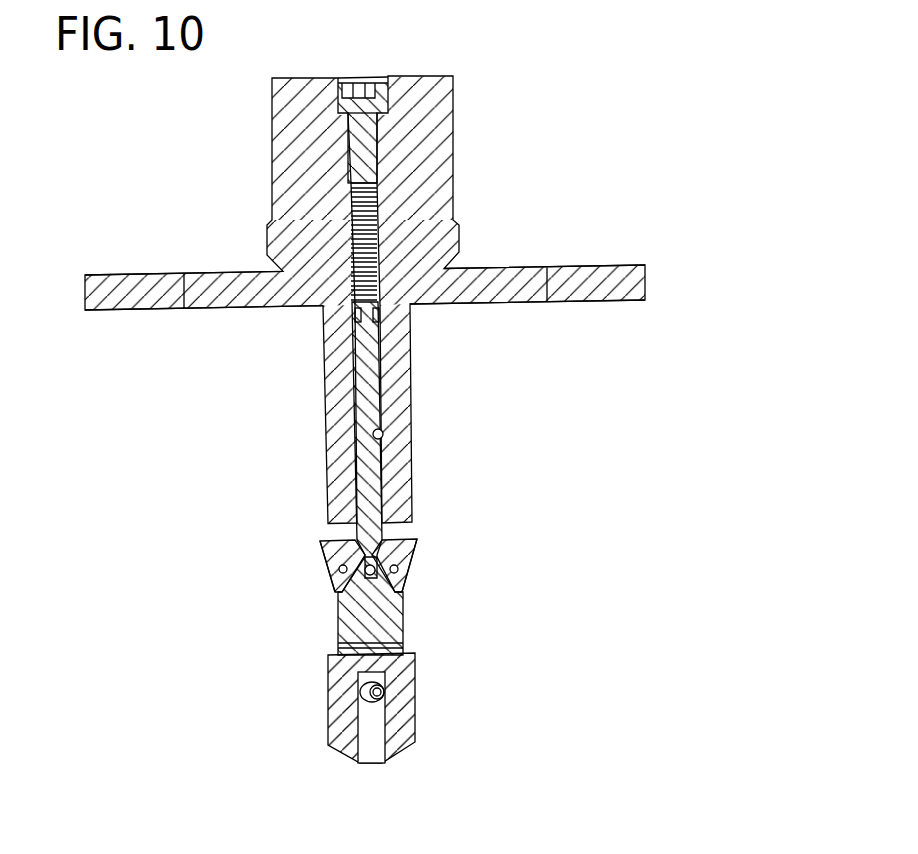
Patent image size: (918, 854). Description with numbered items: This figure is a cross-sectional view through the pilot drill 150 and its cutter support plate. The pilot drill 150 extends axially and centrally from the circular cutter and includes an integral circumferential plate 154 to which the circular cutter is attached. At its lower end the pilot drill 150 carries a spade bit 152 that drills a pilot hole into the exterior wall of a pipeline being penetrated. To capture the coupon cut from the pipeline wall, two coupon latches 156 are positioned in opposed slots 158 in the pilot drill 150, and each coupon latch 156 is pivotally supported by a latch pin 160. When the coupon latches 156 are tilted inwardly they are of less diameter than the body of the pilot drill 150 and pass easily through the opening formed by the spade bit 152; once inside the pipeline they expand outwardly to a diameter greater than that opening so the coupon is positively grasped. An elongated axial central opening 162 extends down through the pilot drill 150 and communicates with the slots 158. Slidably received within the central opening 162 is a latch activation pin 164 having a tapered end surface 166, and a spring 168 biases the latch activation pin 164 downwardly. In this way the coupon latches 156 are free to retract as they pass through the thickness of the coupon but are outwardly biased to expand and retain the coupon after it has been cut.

The pilot drill 150 is at (325, 437).
The spade bit 152 is at (402, 750).
The circumferential plate 154 is at (235, 307).
The coupon latch 156 is at (335, 553).
The slot 158 is at (333, 533).
The latch pin 160 is at (345, 570).
The central opening 162 is at (384, 429).
The latch activation pin 164 is at (370, 373).
The tapered end surface 166 is at (396, 569).
The spring 168 is at (378, 211).